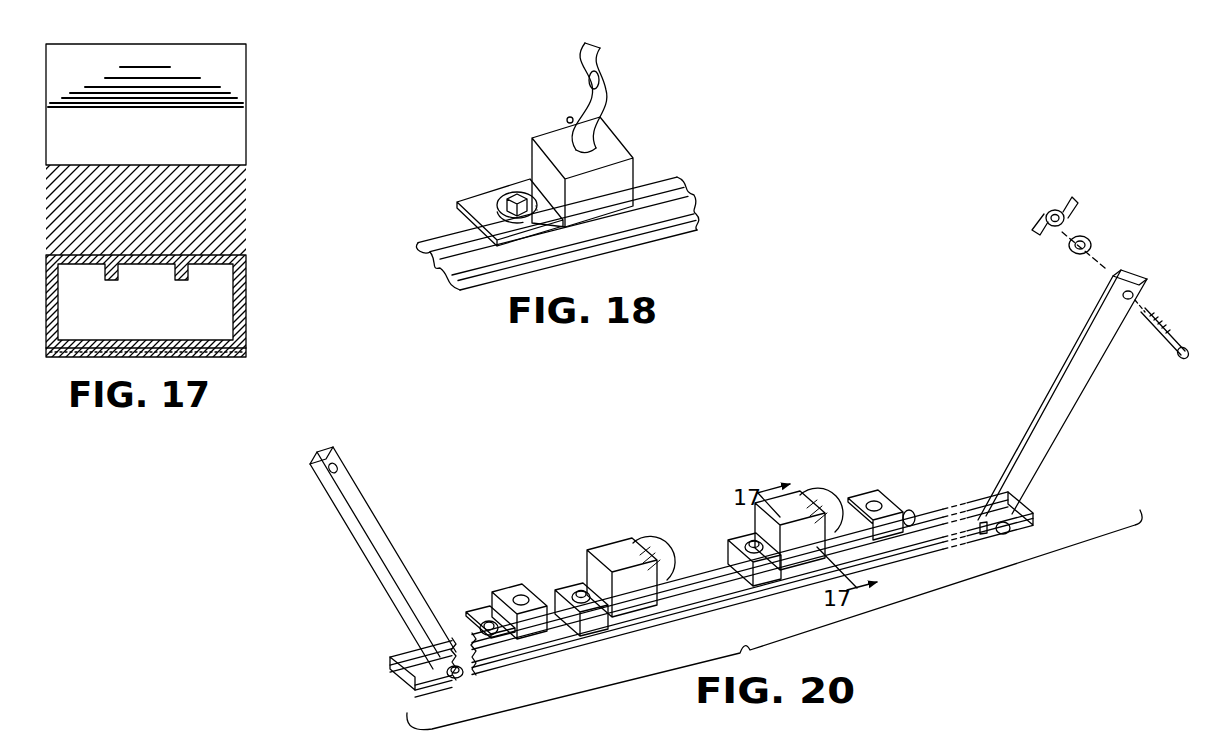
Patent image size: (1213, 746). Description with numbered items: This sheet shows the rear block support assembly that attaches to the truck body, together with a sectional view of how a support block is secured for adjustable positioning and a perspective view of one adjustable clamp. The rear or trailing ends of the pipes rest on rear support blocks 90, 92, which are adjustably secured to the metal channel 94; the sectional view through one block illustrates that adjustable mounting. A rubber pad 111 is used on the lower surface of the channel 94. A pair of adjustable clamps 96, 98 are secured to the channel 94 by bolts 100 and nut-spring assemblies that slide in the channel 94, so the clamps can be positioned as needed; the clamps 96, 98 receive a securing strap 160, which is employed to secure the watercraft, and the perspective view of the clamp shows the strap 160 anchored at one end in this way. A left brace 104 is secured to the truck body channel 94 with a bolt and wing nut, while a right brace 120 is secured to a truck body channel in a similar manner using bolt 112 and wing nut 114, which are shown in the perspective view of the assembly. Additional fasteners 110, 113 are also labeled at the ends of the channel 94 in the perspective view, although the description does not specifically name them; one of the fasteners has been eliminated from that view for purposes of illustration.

In FIG. 20, the rear support block 90 is at (588, 552).
In FIG. 17, the rear support block 92 is at (246, 127).
In FIG. 20, the rear support block 92 is at (803, 503).
In FIG. 17, the metal channel 94 is at (247, 283).
In FIG. 18, the metal channel 94 is at (667, 220).
In FIG. 20, the metal channel 94 is at (738, 598).
In FIG. 18, the adjustable clamp 96 is at (475, 200).
In FIG. 20, the adjustable clamp 96 is at (503, 592).
In FIG. 20, the adjustable clamp 98 is at (878, 498).
In FIG. 18, the bolt 100 is at (515, 194).
In FIG. 20, the bolt 100 is at (488, 620).
In FIG. 20, the left brace 104 is at (378, 530).
In FIG. 17, the bolt 110 is at (57, 46).
In FIG. 20, the bolt 110 is at (460, 683).
In FIG. 17, the rubber pad 111 is at (234, 355).
In FIG. 18, the rubber pad 111 is at (600, 255).
In FIG. 20, the rubber pad 111 is at (581, 640).
In FIG. 20, the bolt 112 is at (1167, 345).
In FIG. 20, the bolt 113 is at (1004, 529).
In FIG. 20, the wing nut 114 is at (1030, 227).
In FIG. 20, the right brace 120 is at (1075, 375).
In FIG. 18, the securing strap 160 is at (582, 50).